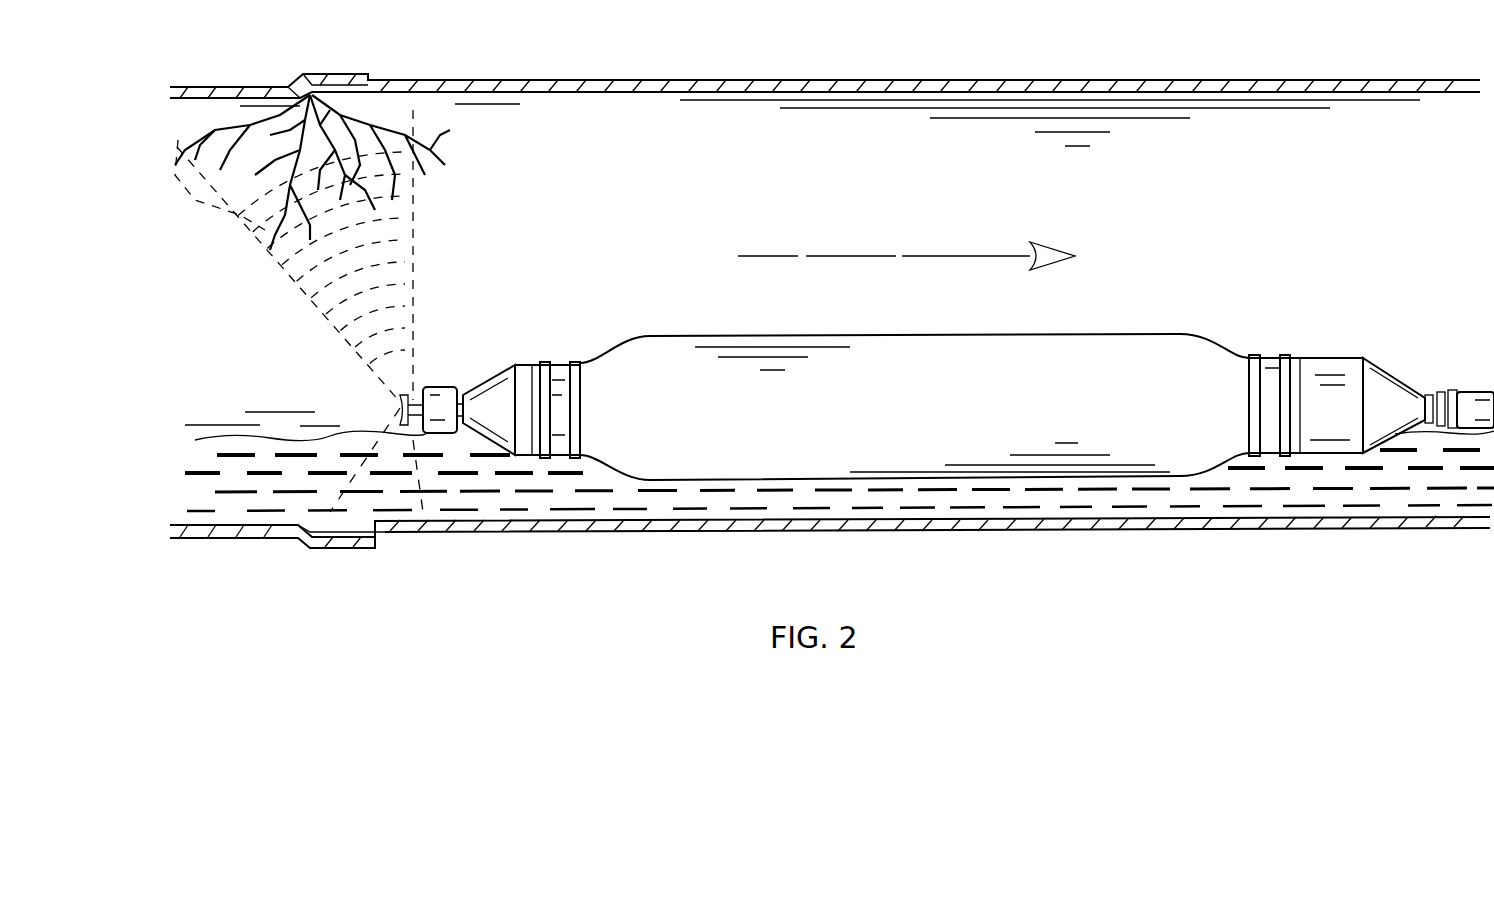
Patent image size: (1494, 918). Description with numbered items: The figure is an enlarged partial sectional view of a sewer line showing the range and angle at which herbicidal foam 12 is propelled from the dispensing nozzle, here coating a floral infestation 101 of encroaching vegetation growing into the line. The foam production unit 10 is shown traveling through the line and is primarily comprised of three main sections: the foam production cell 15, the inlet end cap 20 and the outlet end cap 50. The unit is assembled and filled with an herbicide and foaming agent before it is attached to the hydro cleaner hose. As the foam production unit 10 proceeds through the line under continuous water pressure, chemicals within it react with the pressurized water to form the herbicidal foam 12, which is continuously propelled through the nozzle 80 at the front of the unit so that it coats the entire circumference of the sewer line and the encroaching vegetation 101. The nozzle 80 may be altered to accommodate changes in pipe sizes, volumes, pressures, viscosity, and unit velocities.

The foam production unit 10 is at (858, 238).
The herbicidal foam 12 is at (335, 245).
The foam production cell 15 is at (1247, 302).
The inlet end cap 20 is at (1423, 345).
The outlet end cap 50 is at (578, 350).
The nozzle 80 is at (398, 404).
The floral infestation 101 is at (410, 90).